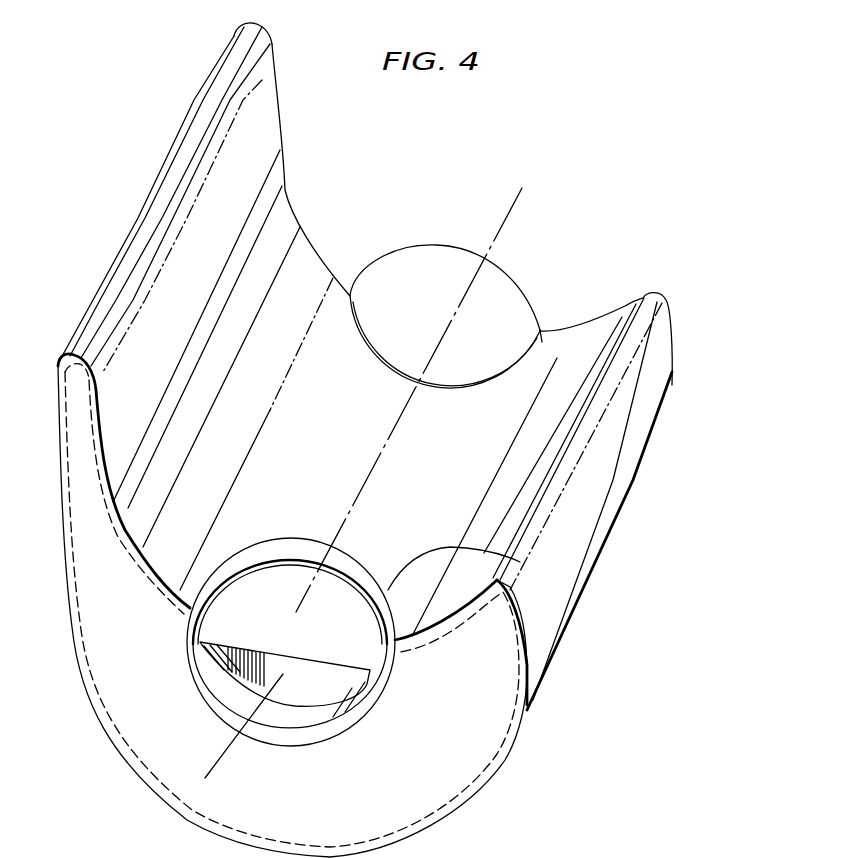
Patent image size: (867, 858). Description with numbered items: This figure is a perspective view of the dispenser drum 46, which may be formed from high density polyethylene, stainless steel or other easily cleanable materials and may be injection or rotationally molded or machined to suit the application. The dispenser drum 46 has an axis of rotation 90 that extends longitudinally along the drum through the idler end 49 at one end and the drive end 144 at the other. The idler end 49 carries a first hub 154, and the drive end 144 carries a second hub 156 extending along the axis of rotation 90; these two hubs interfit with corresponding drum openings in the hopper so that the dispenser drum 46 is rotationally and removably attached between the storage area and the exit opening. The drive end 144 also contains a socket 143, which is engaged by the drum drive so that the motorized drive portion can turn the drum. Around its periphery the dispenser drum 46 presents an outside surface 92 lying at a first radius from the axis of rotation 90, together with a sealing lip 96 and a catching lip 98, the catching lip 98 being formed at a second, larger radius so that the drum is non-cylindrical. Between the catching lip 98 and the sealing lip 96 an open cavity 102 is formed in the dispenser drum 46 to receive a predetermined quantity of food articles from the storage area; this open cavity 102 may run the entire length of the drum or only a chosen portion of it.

The dispenser drum 46 is at (673, 387).
The idler end 49 is at (532, 321).
The axis of rotation 90 is at (497, 232).
The outside surface 92 is at (468, 806).
The sealing lip 96 is at (588, 432).
The catching lip 98 is at (178, 173).
The open cavity 102 is at (314, 477).
The socket 143 is at (283, 675).
The drive end 144 is at (520, 562).
The first hub 154 is at (511, 284).
The second hub 156 is at (240, 619).